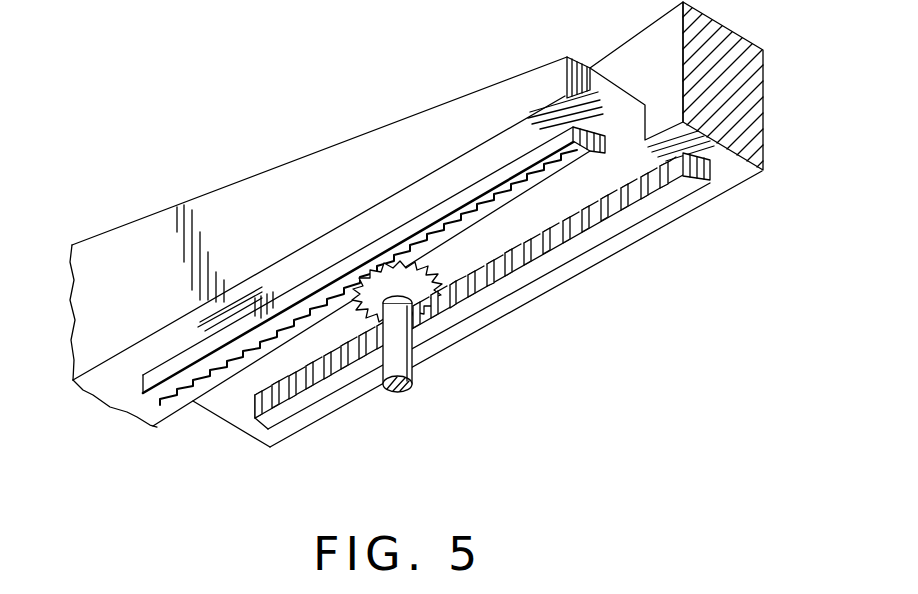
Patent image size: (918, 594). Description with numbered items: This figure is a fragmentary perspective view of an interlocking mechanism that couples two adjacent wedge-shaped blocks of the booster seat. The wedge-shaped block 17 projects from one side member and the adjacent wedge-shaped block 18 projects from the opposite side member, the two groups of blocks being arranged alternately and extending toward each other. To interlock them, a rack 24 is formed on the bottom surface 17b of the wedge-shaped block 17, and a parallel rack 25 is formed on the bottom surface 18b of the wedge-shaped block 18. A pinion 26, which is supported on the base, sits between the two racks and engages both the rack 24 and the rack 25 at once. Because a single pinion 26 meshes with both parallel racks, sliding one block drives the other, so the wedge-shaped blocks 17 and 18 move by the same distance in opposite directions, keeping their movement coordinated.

The wedge-shaped block 17 is at (284, 156).
The bottom surface of wedge-shaped block 17b is at (118, 379).
The wedge-shaped block 18 is at (774, 98).
The bottom surface of wedge-shaped block 18b is at (723, 170).
The rack 24 is at (182, 388).
The rack 25 is at (567, 252).
The pinion 26 is at (433, 313).